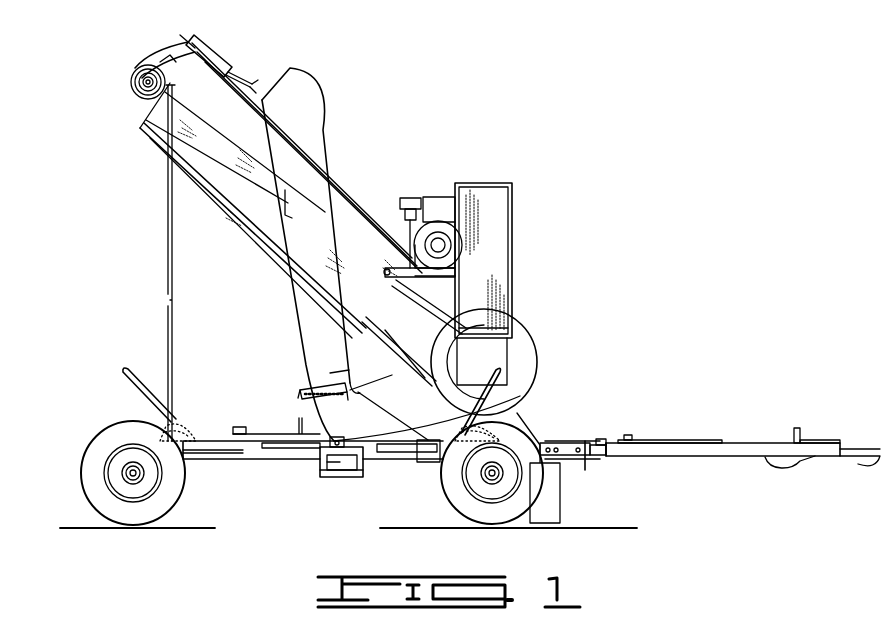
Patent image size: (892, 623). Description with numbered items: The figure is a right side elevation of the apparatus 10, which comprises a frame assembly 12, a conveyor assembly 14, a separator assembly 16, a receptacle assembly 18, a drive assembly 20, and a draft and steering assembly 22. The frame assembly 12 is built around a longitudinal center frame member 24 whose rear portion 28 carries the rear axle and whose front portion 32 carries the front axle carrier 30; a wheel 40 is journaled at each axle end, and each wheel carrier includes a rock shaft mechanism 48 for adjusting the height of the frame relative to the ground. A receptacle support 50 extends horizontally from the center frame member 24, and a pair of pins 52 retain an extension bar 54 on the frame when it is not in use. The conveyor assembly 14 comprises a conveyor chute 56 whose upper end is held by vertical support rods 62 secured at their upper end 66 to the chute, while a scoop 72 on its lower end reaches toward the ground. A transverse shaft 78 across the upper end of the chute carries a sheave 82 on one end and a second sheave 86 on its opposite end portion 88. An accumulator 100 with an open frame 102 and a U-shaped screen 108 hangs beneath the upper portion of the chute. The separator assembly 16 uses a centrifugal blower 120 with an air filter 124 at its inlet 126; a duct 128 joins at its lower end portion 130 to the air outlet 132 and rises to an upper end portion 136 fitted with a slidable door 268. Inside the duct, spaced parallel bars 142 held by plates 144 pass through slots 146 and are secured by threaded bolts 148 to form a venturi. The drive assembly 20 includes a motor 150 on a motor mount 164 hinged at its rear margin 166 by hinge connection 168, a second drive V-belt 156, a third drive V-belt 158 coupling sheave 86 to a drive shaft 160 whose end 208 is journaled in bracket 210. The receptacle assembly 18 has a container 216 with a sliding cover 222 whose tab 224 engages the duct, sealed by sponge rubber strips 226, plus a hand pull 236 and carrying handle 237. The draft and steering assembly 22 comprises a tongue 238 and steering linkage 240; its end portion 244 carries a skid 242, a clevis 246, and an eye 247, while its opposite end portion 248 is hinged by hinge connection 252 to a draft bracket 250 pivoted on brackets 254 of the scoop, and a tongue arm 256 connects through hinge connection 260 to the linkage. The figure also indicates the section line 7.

The section line 7 is at (338, 423).
The apparatus 10 is at (437, 91).
The frame assembly 12 is at (391, 438).
The conveyor assembly 14 is at (392, 364).
The separator assembly 16 is at (288, 214).
The receptacle assembly 18 is at (310, 469).
The drive assembly 20 is at (445, 213).
The draft and steering assembly 22 is at (735, 445).
The center frame member 24 is at (245, 457).
The rear portion 28 is at (190, 461).
The front axle carrier 30 is at (430, 470).
The front portion 32 is at (435, 462).
The wheel 40 is at (133, 540).
The rock shaft mechanism 48 is at (186, 425).
The receptacle support 50 is at (346, 478).
The pins 52 is at (298, 425).
The extension bar 54 is at (252, 428).
The conveyor chute 56 is at (372, 322).
The support rods 62 is at (166, 208).
The upper end 66 is at (150, 102).
The scoop 72 is at (562, 509).
The second transverse shaft 78 is at (133, 72).
The sheave 82 is at (166, 58).
The second sheave 86 is at (146, 62).
The opposite end portion 88 is at (138, 85).
The accumulator 100 is at (235, 225).
The open frame 102 is at (215, 207).
The screen 108 is at (262, 238).
The centrifugal blower 120 is at (518, 333).
The air filter 124 is at (508, 215).
The inlet 126 is at (510, 352).
The duct 128 is at (306, 351).
The lower end portion 130 is at (420, 395).
The air outlet 132 is at (410, 363).
The upper end portion 136 is at (304, 254).
The spaced parallel bars 142 is at (343, 383).
The plates 144 is at (330, 398).
The slots 146 is at (318, 388).
The threaded bolts 148 is at (298, 394).
The motor 150 is at (428, 215).
The second drive V-belt 156 is at (340, 210).
The third drive V-belt 158 is at (172, 52).
The drive shaft 160 is at (234, 66).
The motor mount 164 is at (455, 272).
The rear margin 166 is at (420, 300).
The hinge connection 168 is at (386, 265).
The end 208 is at (212, 48).
The bracket 210 is at (254, 86).
The container 216 is at (350, 475).
The cover 222 is at (340, 438).
The tab 224 is at (344, 443).
The sponge rubber strips 226 is at (318, 447).
The hand pull 236 is at (355, 478).
The carrying handle 237 is at (358, 468).
The tongue 238 is at (737, 443).
The steering linkage 240 is at (620, 438).
The skid 242 is at (778, 468).
The end portion 244 is at (812, 441).
The clevis 246 is at (845, 472).
The eye 247 is at (800, 430).
The opposite end portion 248 is at (622, 458).
The draft bracket 250 is at (588, 443).
The hinge connection 252 is at (602, 457).
The brackets 254 is at (565, 460).
The tongue arm 256 is at (655, 440).
The hinge connection 260 is at (630, 435).
The door 268 is at (284, 184).